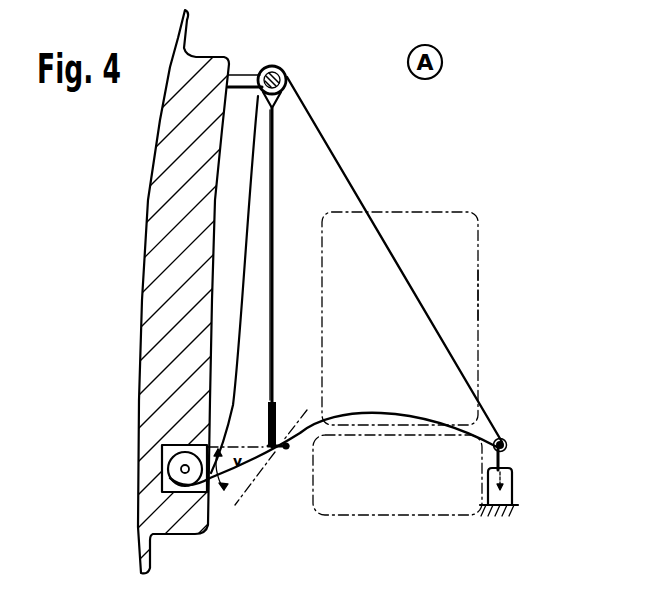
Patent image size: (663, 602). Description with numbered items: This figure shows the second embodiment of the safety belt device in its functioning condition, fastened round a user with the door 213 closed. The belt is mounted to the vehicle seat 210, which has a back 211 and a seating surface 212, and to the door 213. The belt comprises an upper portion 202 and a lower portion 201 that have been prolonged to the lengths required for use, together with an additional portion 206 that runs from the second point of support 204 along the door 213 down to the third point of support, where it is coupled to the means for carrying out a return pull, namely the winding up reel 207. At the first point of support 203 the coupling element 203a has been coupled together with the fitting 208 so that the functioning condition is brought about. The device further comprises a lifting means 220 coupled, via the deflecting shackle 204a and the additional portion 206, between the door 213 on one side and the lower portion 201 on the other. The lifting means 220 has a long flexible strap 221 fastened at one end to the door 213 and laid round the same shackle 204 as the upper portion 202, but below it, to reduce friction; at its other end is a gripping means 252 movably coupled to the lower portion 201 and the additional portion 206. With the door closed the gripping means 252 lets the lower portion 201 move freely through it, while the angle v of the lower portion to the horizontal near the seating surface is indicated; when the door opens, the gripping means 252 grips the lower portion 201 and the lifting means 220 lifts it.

The lower portion 201 is at (300, 449).
The upper portion 202 is at (320, 122).
The point of support 203 is at (503, 444).
The coupling element 203a is at (506, 449).
The point of support 204 is at (268, 63).
The deflecting shackle 204a is at (283, 72).
The additional portion 206 is at (244, 278).
The winding up reel 207 is at (166, 484).
The fitting 208 is at (503, 488).
The vehicle seat 210 is at (481, 214).
The back 211 is at (472, 299).
The seating surface 212 is at (407, 500).
The door 213 is at (160, 309).
The lifting means 220 is at (275, 205).
The flexible strap 221 is at (275, 178).
The gripping means 252 is at (283, 443).